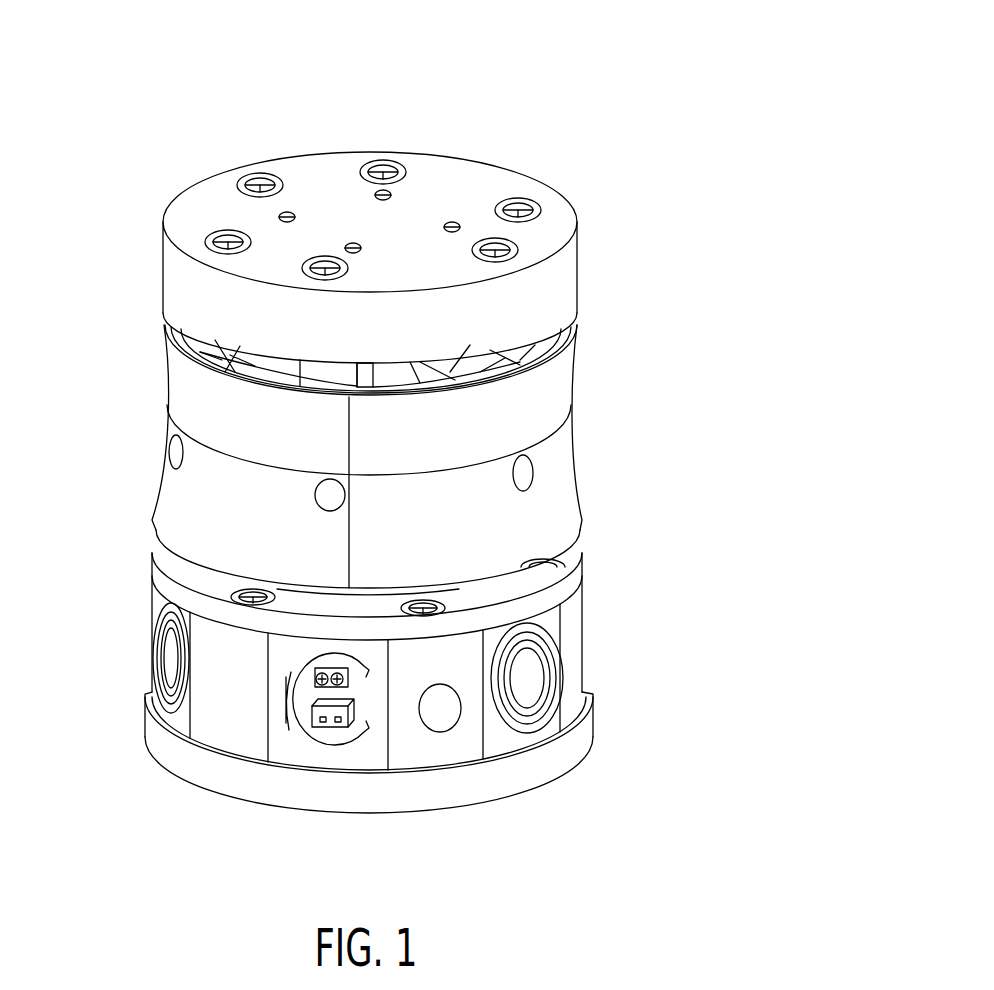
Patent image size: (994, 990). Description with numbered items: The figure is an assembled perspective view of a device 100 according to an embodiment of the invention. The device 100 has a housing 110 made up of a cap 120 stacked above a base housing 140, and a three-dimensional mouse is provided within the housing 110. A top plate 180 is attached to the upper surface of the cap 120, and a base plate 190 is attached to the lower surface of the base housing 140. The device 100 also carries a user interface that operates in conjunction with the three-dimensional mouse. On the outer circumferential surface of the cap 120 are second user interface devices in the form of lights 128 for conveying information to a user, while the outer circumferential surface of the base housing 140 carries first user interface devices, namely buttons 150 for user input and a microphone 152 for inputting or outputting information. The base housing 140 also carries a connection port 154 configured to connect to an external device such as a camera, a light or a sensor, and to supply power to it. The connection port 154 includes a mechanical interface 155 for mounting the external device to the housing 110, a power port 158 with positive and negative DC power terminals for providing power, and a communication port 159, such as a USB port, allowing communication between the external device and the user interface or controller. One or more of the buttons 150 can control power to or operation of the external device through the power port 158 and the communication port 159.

The device 100 is at (590, 84).
The housing 110 is at (618, 426).
The cap 120 is at (140, 387).
The lights 128 is at (177, 455).
The base housing 140 is at (125, 587).
The buttons 150 is at (162, 657).
The microphone 152 is at (445, 730).
The connection port 154 is at (326, 770).
The mechanical interface 155 is at (295, 723).
The power port 158 is at (317, 677).
The communication port 159 is at (335, 727).
The top plate 180 is at (160, 258).
The base plate 190 is at (140, 737).